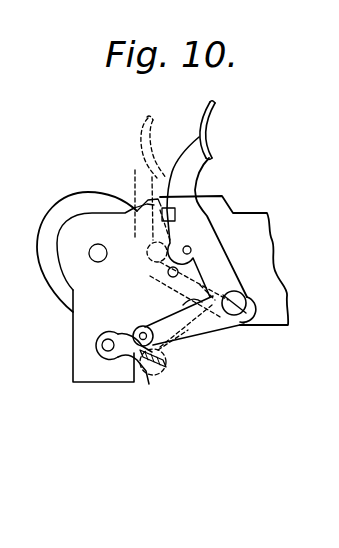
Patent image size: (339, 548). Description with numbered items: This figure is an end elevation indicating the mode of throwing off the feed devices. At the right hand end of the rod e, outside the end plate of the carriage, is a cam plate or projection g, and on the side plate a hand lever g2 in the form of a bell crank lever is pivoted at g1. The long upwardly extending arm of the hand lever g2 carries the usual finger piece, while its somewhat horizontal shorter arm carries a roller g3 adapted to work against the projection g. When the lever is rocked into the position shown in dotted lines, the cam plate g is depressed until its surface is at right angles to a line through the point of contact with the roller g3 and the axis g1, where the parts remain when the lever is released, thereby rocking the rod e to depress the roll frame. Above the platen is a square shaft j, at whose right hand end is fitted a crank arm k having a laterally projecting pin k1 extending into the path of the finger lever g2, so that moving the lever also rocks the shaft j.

The shaft j is at (158, 200).
The crank arm k is at (168, 228).
The laterally projecting pin k1 is at (193, 253).
The hand lever g2 is at (200, 218).
The pivot g1 is at (238, 315).
The roller g3 is at (141, 326).
The cam plate g is at (141, 352).
The rod e is at (103, 350).